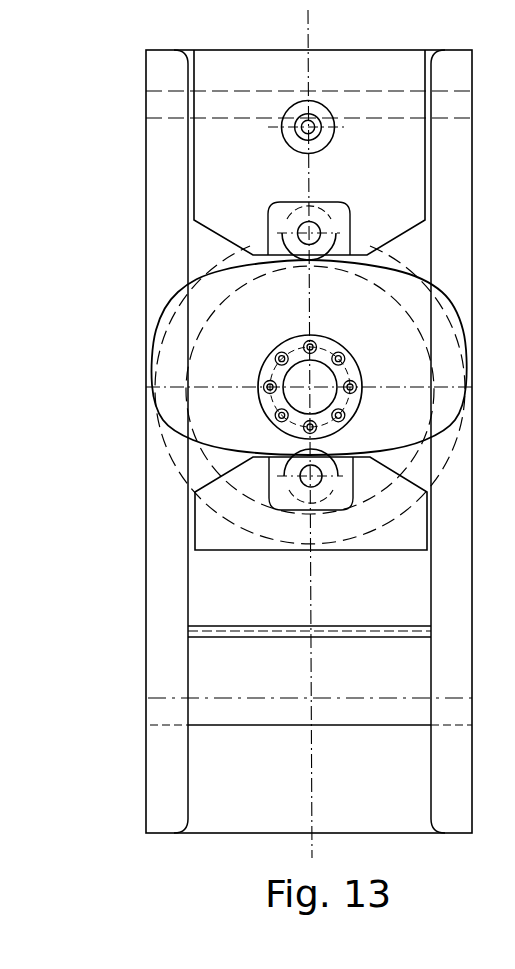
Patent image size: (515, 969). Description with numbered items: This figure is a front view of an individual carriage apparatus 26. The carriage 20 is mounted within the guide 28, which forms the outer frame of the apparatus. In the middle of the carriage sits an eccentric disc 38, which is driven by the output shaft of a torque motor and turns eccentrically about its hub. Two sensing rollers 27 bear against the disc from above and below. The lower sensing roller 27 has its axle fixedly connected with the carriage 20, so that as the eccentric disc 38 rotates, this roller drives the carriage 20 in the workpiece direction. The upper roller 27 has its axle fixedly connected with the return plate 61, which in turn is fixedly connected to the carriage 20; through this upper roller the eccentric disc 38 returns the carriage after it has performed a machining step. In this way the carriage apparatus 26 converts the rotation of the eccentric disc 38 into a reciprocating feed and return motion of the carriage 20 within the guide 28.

The carriage 20 is at (212, 532).
The carriage apparatus 26 is at (130, 532).
The sensing roller 27 is at (290, 260).
The guide 28 is at (167, 782).
The eccentric disc 38 is at (207, 347).
The return plate 61 is at (238, 180).